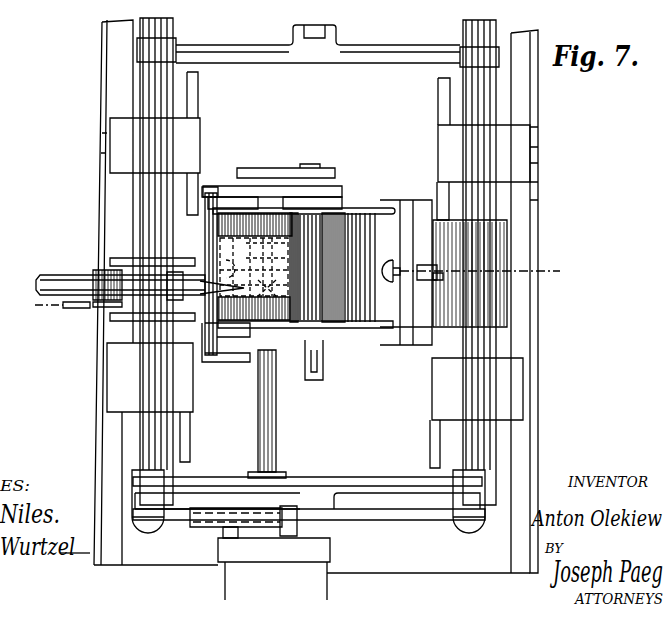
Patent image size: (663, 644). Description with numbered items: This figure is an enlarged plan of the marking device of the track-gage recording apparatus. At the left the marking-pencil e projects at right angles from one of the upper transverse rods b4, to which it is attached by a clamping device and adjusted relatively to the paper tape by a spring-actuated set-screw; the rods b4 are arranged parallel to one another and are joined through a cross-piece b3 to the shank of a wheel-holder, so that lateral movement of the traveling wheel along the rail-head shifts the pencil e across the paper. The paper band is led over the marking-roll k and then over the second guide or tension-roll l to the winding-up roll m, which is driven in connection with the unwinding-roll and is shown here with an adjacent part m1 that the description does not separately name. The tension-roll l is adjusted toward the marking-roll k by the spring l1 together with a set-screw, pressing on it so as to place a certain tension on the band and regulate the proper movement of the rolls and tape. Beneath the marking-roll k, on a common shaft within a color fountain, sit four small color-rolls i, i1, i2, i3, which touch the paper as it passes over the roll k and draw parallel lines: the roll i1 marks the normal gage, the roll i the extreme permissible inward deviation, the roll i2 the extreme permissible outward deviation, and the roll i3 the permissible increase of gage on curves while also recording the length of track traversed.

The cross-piece b3 is at (383, 477).
The transverse rods b4 is at (550, 201).
The marking-pencil e is at (50, 278).
The color-roll i is at (273, 290).
The color-roll i1 is at (283, 300).
The color-roll i2 is at (275, 278).
The color-roll i3 is at (258, 260).
The marking-roll k is at (280, 246).
The tension-roll l is at (343, 221).
The spring l1 is at (390, 267).
The winding-up roll m is at (313, 313).
The housing bracket m1 is at (250, 177).